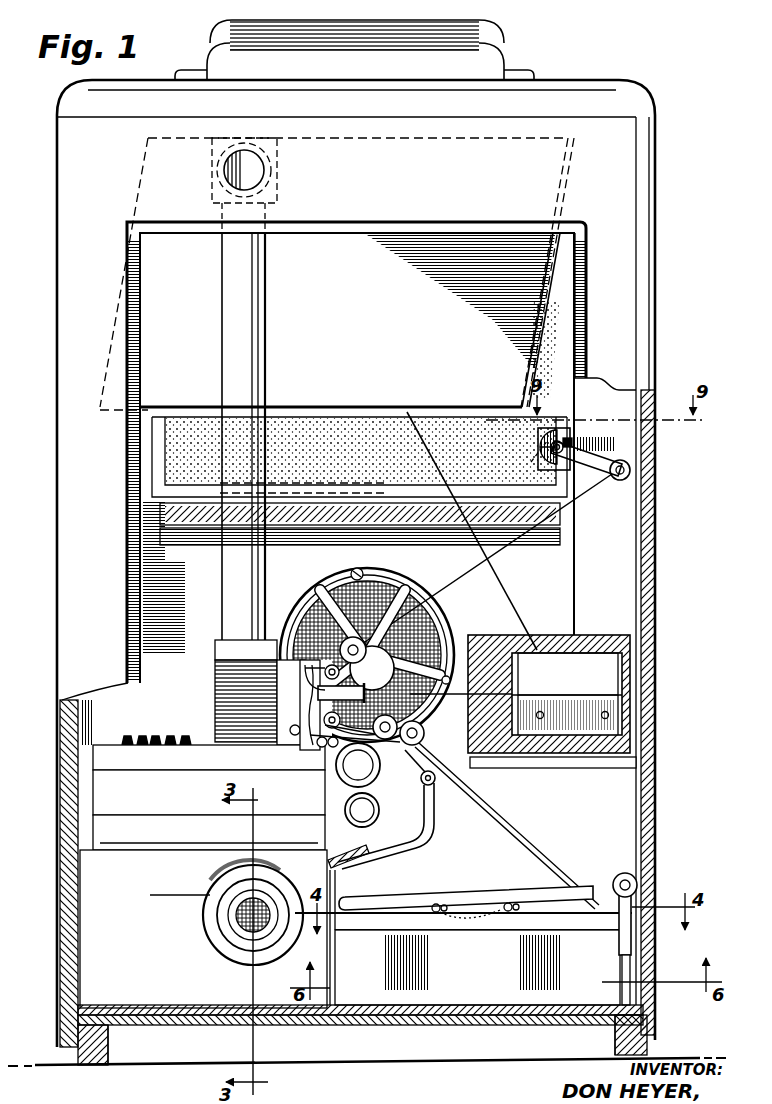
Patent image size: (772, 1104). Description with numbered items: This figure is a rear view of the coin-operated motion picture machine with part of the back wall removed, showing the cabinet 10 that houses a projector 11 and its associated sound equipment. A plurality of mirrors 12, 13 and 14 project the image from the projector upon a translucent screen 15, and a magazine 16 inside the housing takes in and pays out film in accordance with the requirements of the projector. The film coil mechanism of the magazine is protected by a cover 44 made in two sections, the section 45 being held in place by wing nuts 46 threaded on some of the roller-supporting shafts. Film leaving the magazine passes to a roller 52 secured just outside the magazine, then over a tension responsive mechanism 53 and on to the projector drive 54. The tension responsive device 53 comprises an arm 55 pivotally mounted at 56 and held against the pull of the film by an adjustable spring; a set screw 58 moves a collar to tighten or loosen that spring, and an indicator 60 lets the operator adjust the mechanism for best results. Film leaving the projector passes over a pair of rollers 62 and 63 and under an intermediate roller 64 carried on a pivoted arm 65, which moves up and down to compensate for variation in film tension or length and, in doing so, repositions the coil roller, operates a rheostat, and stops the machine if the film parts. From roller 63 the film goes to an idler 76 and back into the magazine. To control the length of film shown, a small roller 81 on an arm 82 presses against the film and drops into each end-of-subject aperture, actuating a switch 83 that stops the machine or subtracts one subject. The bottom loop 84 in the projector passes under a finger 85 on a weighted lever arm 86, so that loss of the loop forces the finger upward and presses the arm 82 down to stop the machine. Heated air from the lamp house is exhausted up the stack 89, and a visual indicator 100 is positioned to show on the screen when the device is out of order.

The cabinet 10 is at (660, 181).
The projector 11 is at (214, 732).
The mirror 12 is at (567, 694).
The mirror 13 is at (540, 635).
The mirror 14 is at (368, 410).
The translucent screen 15 is at (367, 437).
The magazine 16 is at (440, 893).
The cover 44 is at (376, 900).
The cover section 45 is at (492, 912).
The wing nuts 46 is at (520, 905).
The second roller 52 is at (622, 873).
The tension responsive mechanism 53 is at (586, 476).
The projector drive 54 is at (362, 648).
The arm 55 is at (592, 455).
The pivot 56 is at (545, 457).
The set screw 58 is at (576, 443).
The indicator 60 is at (557, 430).
The roller 62 is at (378, 803).
The roller 63 is at (428, 743).
The intermediate roller 64 is at (436, 789).
The pivoted arm 65 is at (394, 842).
The idler 76 is at (588, 915).
The small roller 81 is at (345, 752).
The arm 82 is at (358, 765).
The switch 83 is at (372, 735).
The bottom loop 84 is at (322, 760).
The finger 85 is at (306, 746).
The weighted lever arm 86 is at (399, 727).
The stack 89 is at (236, 601).
The visual indicator 100 is at (395, 520).